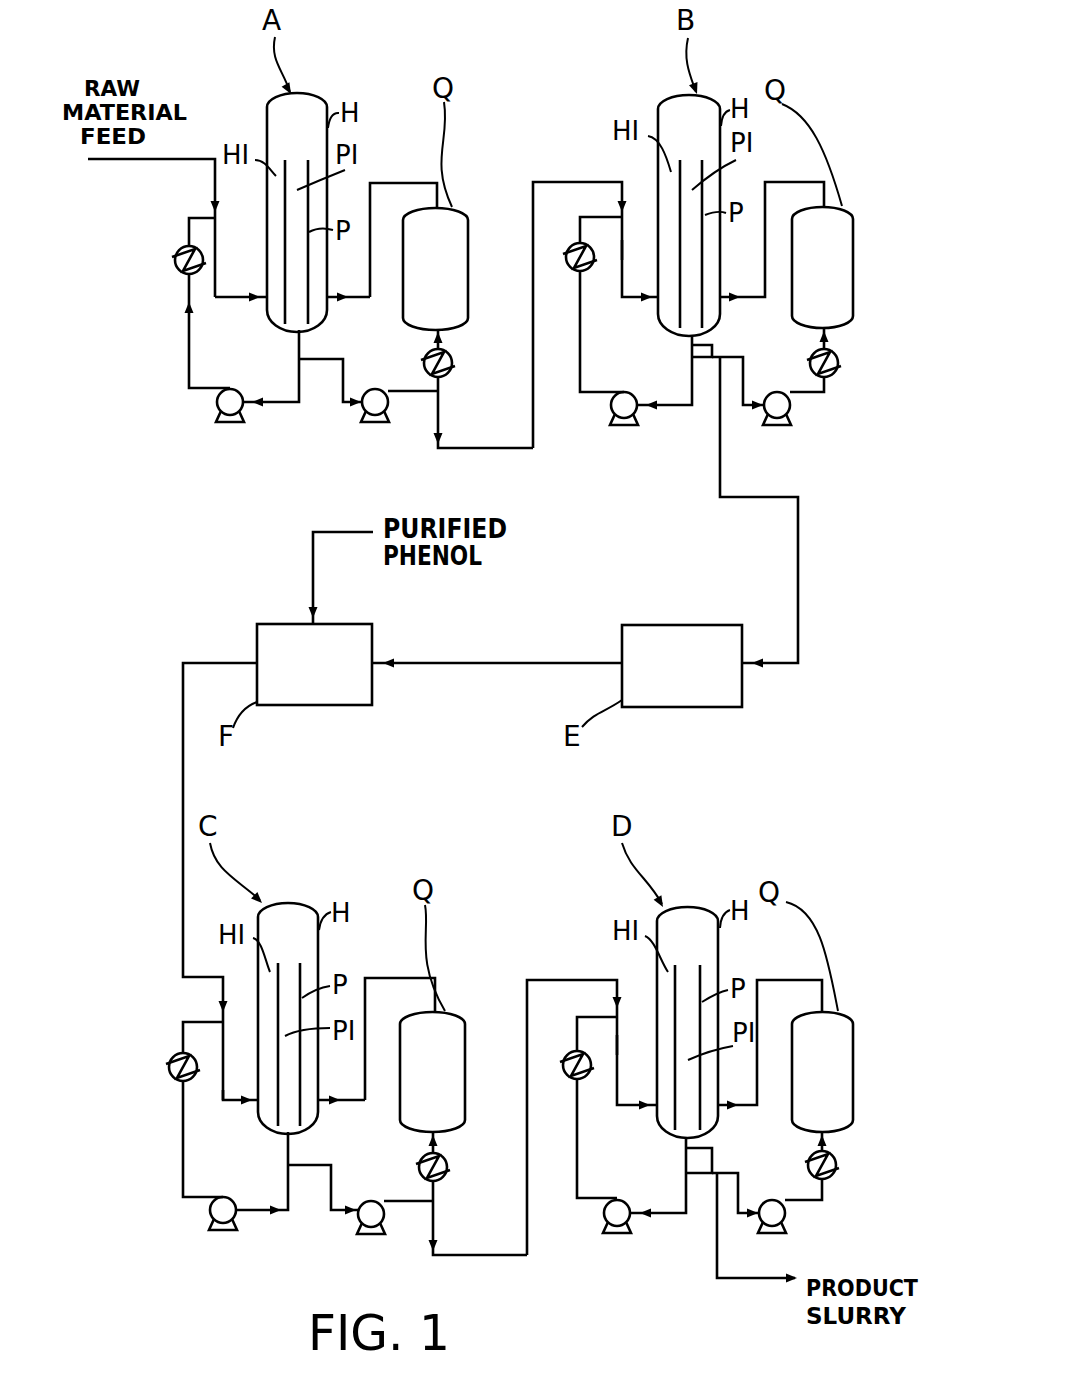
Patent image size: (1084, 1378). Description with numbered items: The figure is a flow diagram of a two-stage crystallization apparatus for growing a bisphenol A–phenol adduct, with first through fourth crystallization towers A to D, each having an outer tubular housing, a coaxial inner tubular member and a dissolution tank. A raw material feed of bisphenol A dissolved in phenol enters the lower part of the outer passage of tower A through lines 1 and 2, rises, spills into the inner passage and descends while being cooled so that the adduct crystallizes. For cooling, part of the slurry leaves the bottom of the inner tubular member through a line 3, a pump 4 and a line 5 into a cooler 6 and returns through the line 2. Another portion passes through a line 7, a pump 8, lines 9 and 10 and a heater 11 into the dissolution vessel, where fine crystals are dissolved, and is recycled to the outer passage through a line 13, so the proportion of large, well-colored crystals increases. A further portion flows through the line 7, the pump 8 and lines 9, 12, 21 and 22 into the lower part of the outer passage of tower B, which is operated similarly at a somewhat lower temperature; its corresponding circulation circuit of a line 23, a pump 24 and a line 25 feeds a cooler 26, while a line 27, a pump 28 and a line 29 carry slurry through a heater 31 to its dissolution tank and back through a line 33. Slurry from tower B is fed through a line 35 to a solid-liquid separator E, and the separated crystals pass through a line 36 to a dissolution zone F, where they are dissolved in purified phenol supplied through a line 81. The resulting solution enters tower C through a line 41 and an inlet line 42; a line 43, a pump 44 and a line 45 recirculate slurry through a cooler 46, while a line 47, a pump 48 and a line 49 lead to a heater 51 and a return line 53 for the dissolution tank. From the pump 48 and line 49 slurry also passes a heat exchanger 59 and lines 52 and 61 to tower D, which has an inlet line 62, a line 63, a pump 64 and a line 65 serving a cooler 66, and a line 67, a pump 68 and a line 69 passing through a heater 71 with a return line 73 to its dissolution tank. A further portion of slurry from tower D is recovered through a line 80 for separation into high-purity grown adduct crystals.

The line 1 is at (106, 160).
The line 2 is at (220, 266).
The line 3 is at (300, 408).
The pump 4 is at (217, 409).
The line 5 is at (187, 322).
The cooler 6 is at (176, 255).
The line 7 is at (316, 362).
The pump 8 is at (366, 414).
The line 9 is at (410, 393).
The line 10 is at (451, 370).
The heater 11 is at (424, 357).
The line 12 is at (440, 421).
The line 13 is at (404, 183).
The line 21 is at (566, 182).
The line 22 is at (628, 276).
The circulation line from reactor B 23 is at (668, 408).
The circulation pump 24 is at (612, 416).
The circulation return line 25 is at (580, 370).
The cooler 26 is at (590, 272).
The withdrawal line from reactor B 27 is at (749, 378).
The transfer pump 28 is at (766, 416).
The transfer line 29 is at (826, 402).
The heater 31 is at (836, 362).
The vapor line and Q vessel 33 is at (768, 183).
The line 35 is at (803, 528).
The line 36 is at (476, 665).
The line 41 is at (182, 880).
The inlet line to reactor C 42 is at (228, 1104).
The circulation line from reactor C 43 is at (280, 1216).
The circulation pump 44 is at (209, 1215).
The circulation return line 45 is at (182, 1175).
The cooler 46 is at (172, 1060).
The line 47 is at (305, 1169).
The pump 48 is at (361, 1224).
The line 49 is at (412, 1203).
The heater 51 is at (420, 1168).
The line 52 is at (435, 1227).
The vapor line and Q vessel 53 is at (385, 978).
The heat exchanger (cooler) 59 is at (444, 1176).
The line 61 is at (577, 980).
The inlet line to reactor D 62 is at (625, 1070).
The circulation line from reactor D 63 is at (668, 1216).
The circulation pump 64 is at (605, 1221).
The circulation return line 65 is at (577, 1178).
The cooler 66 is at (590, 1082).
The withdrawal line from reactor D 67 is at (723, 1176).
The transfer pump 68 is at (770, 1235).
The transfer line 69 is at (808, 1201).
The heater 71 is at (835, 1180).
The vapor line and Q vessel 73 is at (786, 980).
The line 80 is at (720, 1283).
The line 81 is at (328, 530).